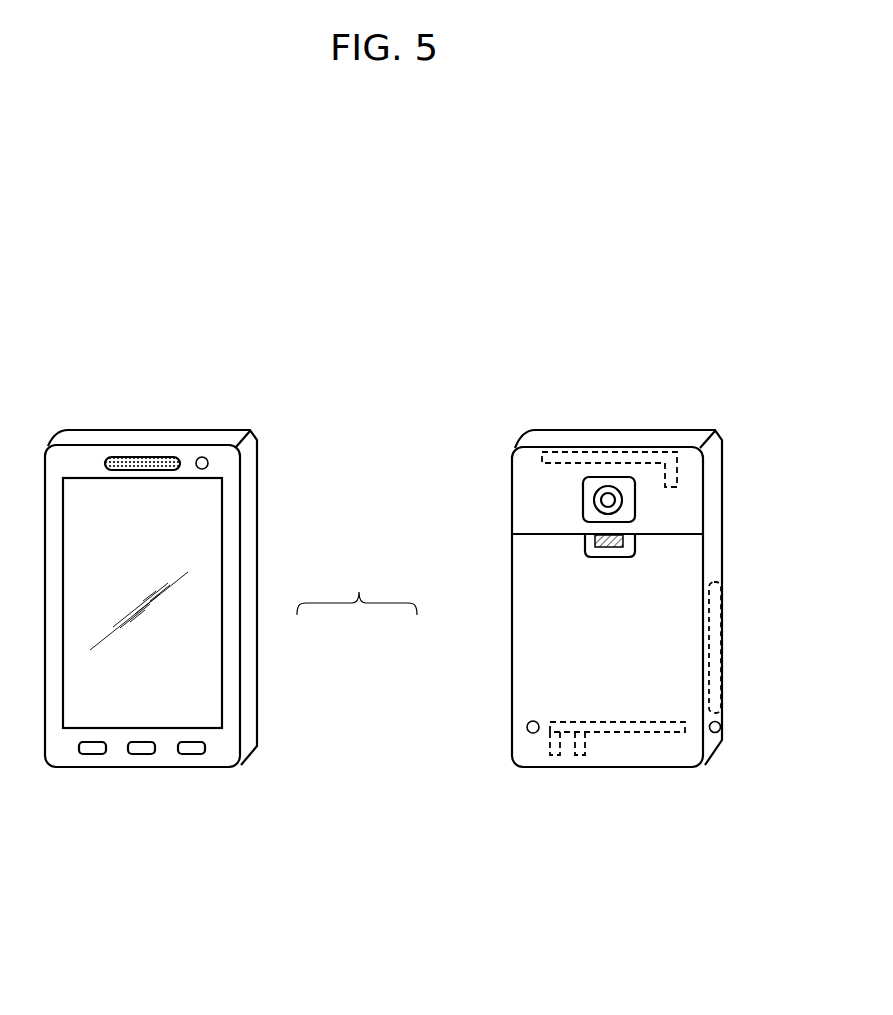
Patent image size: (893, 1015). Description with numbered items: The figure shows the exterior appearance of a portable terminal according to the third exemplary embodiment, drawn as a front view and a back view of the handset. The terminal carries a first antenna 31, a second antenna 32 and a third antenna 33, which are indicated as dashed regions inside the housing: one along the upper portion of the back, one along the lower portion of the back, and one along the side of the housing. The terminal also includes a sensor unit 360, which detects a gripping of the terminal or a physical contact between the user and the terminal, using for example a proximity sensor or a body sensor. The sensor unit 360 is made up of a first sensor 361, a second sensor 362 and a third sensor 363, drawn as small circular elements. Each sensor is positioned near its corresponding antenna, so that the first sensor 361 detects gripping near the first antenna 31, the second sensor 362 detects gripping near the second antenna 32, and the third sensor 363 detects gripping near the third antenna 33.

The first antenna 31 is at (674, 473).
The second antenna 32 is at (550, 743).
The third antenna 33 is at (713, 647).
The sensor unit 360 is at (357, 589).
The first sensor 361 is at (208, 462).
The second sensor 362 is at (528, 721).
The third sensor 363 is at (710, 721).